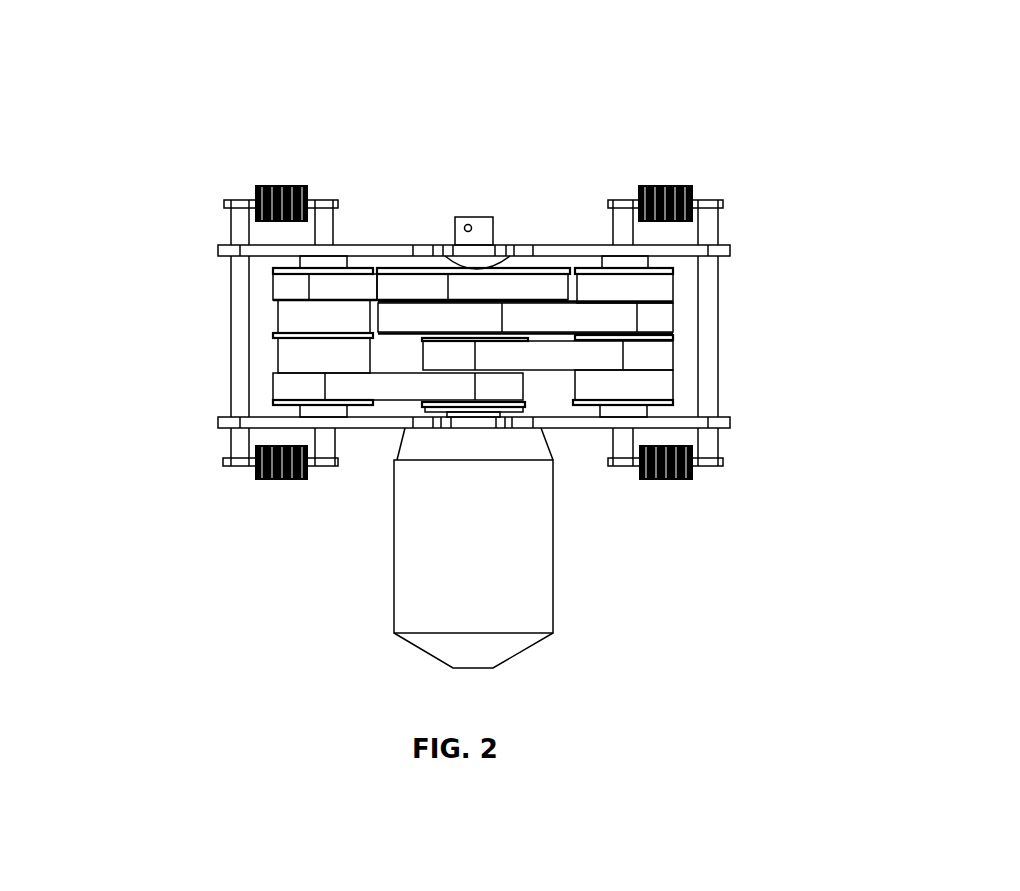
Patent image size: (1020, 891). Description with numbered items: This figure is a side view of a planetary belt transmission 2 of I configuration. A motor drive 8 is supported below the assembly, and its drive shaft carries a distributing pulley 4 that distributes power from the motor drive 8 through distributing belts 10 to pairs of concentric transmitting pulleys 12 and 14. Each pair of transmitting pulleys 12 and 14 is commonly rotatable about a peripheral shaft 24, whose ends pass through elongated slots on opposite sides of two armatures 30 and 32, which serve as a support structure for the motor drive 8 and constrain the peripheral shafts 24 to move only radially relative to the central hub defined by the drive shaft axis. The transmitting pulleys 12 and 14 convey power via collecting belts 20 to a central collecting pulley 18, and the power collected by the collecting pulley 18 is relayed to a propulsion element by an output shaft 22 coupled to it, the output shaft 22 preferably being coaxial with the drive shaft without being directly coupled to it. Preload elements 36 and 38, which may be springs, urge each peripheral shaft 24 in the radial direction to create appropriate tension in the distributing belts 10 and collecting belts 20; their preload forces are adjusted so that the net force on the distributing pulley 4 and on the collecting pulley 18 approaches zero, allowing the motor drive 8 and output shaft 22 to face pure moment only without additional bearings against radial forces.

The planetary belt transmission 2 is at (596, 82).
The distributing pulley 4 is at (500, 410).
The motor drive 8 is at (520, 590).
The distributing belts 10 is at (405, 387).
The transmitting pulley 12 is at (302, 352).
The transmitting pulley 14 is at (307, 318).
The collecting pulley 18 is at (415, 266).
The collecting belts 20 is at (340, 292).
The output shaft 22 is at (460, 222).
The peripheral shaft 24 is at (327, 225).
The armature 30 is at (226, 249).
The armature 32 is at (226, 425).
The preload element 36 is at (250, 198).
The preload element 38 is at (270, 478).